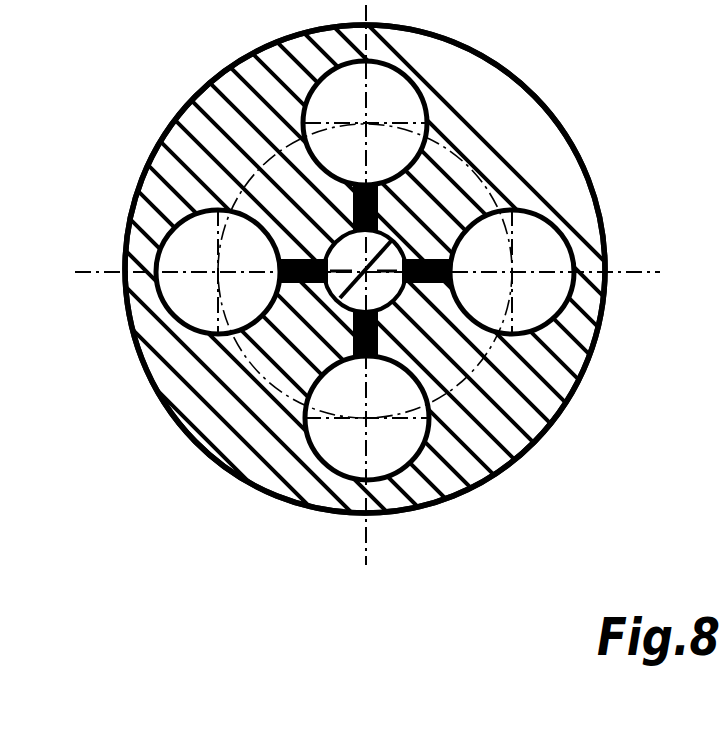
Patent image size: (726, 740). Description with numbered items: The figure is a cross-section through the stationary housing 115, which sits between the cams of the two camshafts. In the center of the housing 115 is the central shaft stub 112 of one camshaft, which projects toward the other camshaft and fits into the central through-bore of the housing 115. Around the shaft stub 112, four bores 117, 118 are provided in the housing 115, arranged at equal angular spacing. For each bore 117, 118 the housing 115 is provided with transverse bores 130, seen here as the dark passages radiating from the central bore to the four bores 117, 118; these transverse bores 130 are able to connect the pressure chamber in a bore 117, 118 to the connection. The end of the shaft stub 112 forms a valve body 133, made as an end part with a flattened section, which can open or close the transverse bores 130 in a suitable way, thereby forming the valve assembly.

The central shaft stub 112 is at (360, 233).
The stationary housing 115 is at (573, 172).
The bore 117 is at (335, 107).
The bore 118 is at (530, 308).
The transverse bore 130 is at (383, 215).
The valve body 133 is at (553, 423).